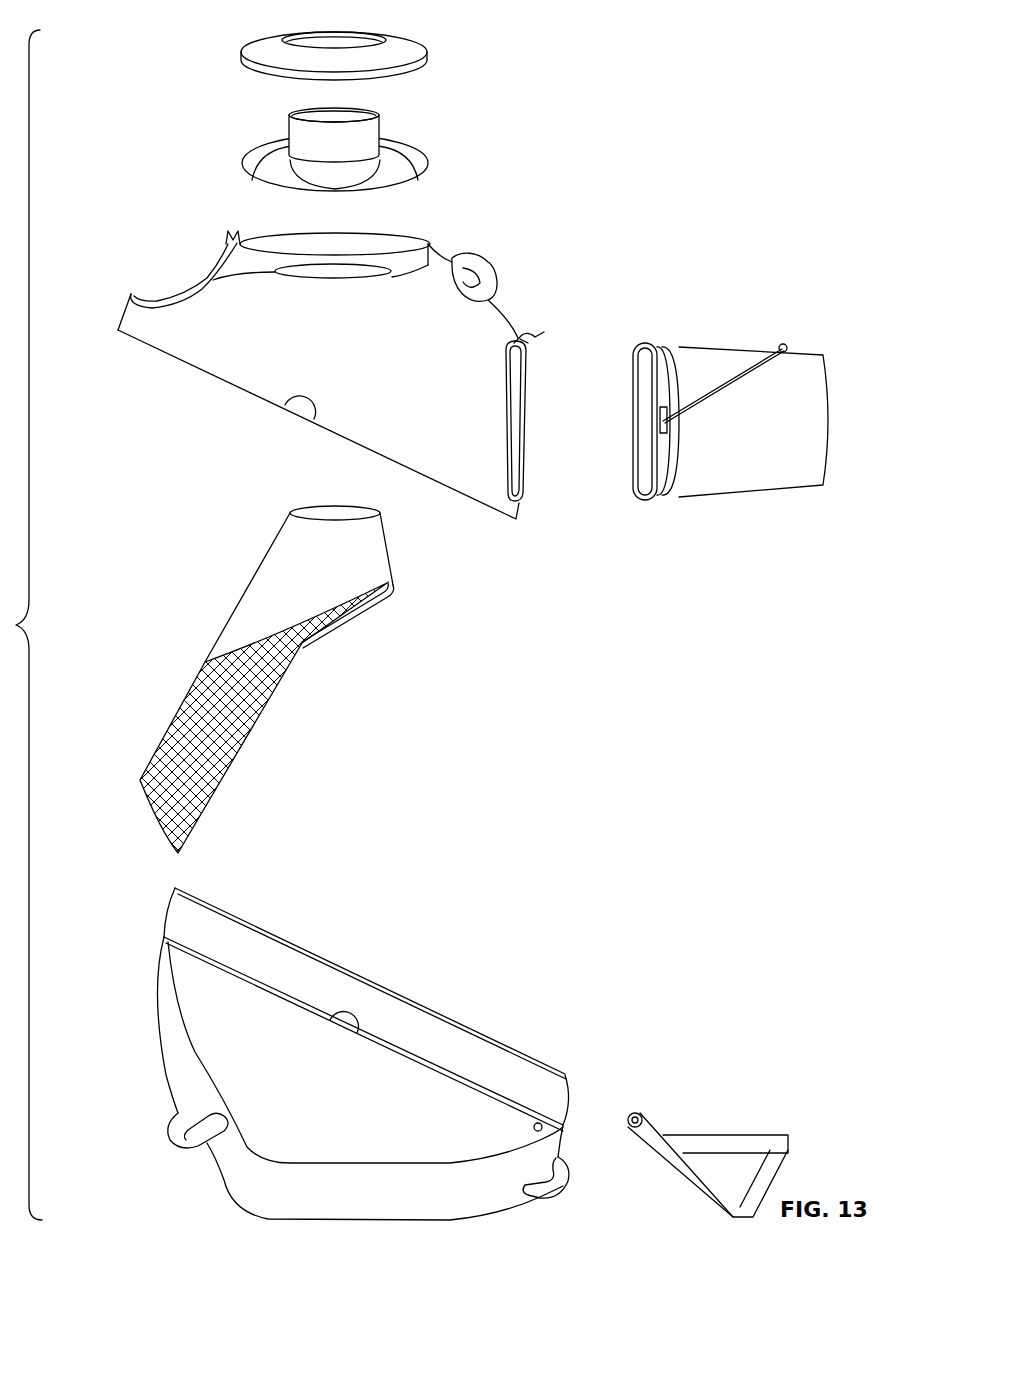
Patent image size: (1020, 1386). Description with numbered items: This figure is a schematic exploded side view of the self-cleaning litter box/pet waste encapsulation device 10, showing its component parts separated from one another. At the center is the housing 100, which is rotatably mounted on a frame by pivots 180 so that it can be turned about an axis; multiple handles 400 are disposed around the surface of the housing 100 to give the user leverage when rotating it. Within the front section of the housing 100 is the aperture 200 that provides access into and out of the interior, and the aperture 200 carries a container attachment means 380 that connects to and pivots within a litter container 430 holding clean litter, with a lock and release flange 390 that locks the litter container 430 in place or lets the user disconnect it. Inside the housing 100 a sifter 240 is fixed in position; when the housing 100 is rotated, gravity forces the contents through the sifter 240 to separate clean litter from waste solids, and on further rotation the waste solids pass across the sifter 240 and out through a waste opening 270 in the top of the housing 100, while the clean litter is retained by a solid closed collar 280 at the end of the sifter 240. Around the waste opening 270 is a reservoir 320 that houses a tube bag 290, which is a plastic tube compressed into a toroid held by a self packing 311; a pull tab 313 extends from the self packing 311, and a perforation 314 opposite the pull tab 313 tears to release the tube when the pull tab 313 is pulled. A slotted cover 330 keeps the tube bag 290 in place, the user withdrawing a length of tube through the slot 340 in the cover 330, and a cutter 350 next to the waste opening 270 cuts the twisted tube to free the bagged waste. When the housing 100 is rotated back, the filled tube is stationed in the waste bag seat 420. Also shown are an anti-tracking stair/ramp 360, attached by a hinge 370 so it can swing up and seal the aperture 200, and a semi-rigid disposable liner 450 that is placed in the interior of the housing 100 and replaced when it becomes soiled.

The self-cleaning litter box/pet waste encapsulation device 10 is at (704, 152).
The housing 100 is at (478, 505).
The pivots 180 is at (306, 400).
The aperture 200 is at (522, 402).
The sifter 240 is at (262, 693).
The waste opening 270 is at (325, 275).
The solid closed collar 280 is at (262, 585).
The tube bag 290 is at (380, 128).
The self packing 311 is at (420, 157).
The pull tab 313 is at (298, 108).
The perforation 314 is at (262, 145).
The reservoir 320 is at (395, 240).
The slotted cover 330 is at (413, 57).
The slot 340 is at (295, 35).
The cutter 350 is at (225, 238).
The anti-tracking stair/ramp 360 is at (752, 1133).
The hinge 370 is at (638, 1115).
The container attachment means 380 is at (503, 403).
The lock and release flange 390 is at (542, 334).
The handles 400 is at (492, 266).
The waste bag seat 420 is at (158, 290).
The litter container 430 is at (760, 490).
The semi-rigid disposable liner 450 is at (428, 1035).